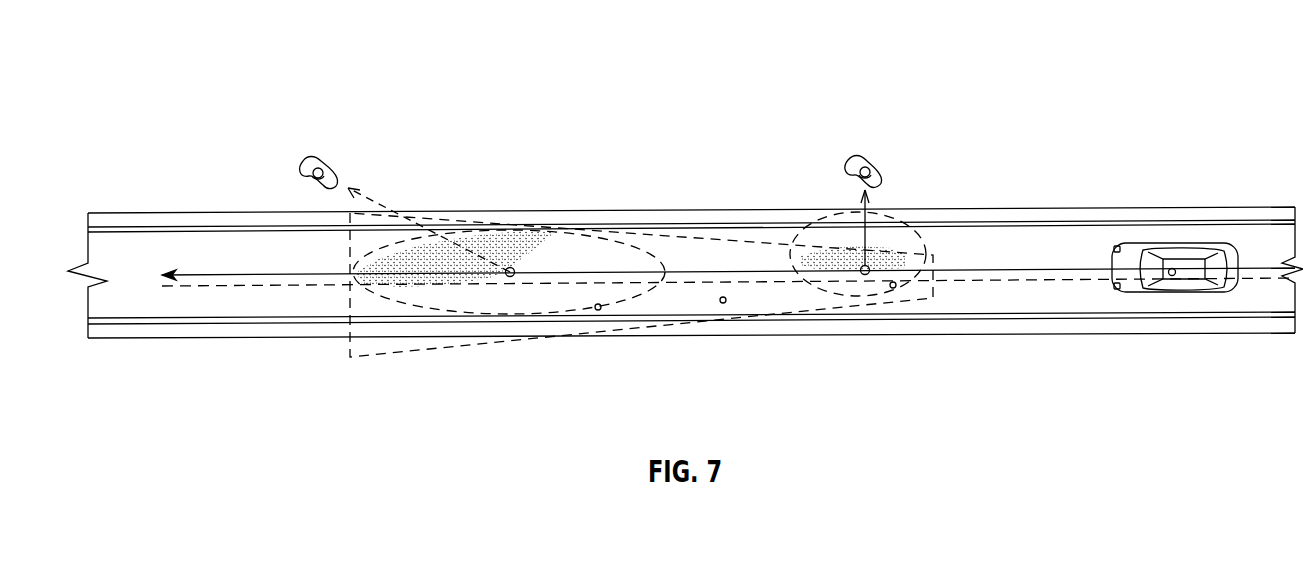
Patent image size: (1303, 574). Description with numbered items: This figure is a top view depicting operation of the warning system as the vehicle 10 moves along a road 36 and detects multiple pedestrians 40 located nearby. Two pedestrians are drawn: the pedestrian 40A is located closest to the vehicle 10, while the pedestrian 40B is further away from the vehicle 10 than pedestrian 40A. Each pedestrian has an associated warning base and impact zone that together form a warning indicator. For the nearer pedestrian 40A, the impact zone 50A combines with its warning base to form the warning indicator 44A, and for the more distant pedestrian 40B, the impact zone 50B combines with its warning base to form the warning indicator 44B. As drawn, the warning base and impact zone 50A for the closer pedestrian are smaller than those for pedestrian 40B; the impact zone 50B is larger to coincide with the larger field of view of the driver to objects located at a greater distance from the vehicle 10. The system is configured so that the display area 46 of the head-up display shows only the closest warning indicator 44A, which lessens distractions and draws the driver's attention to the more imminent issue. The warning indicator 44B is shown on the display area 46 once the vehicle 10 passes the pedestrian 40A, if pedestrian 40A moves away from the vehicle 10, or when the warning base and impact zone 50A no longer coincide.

The vehicle 10 is at (1177, 258).
The road 36 is at (1242, 238).
The pedestrians 40 is at (636, 48).
The pedestrian 40A is at (868, 162).
The pedestrian 40B is at (325, 162).
The warning indicator 44A is at (887, 263).
The warning indicator 44B is at (515, 240).
The display area 46 is at (723, 304).
The impact zone 50A is at (893, 289).
The impact zone 50B is at (598, 311).